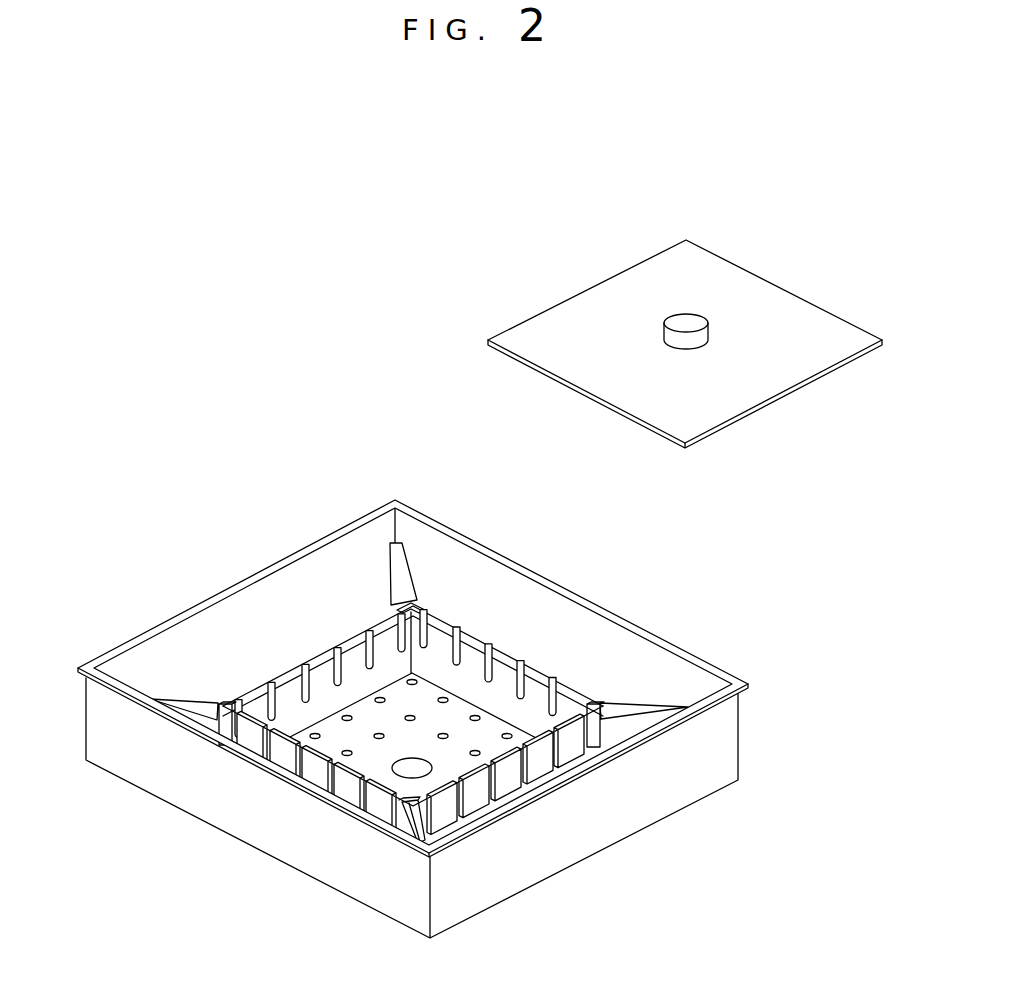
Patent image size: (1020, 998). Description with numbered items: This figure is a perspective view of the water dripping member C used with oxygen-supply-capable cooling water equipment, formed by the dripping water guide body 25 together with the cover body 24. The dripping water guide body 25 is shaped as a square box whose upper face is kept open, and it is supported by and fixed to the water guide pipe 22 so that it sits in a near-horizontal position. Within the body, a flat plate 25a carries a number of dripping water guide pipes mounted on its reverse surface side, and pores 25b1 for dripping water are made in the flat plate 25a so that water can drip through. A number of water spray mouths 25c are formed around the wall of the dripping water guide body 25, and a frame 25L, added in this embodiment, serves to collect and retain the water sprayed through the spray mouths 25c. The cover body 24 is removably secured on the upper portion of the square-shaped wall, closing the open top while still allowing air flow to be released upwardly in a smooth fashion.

The cover body 24 is at (768, 308).
The water dripping member C is at (413, 686).
The dripping water guide body 25 is at (432, 717).
The frame 25L is at (445, 528).
The flat plate 25a is at (322, 752).
The pores for dripping water 25b1 is at (423, 672).
The water spray mouths 25c is at (567, 767).
The water guide pipe 22 is at (413, 768).